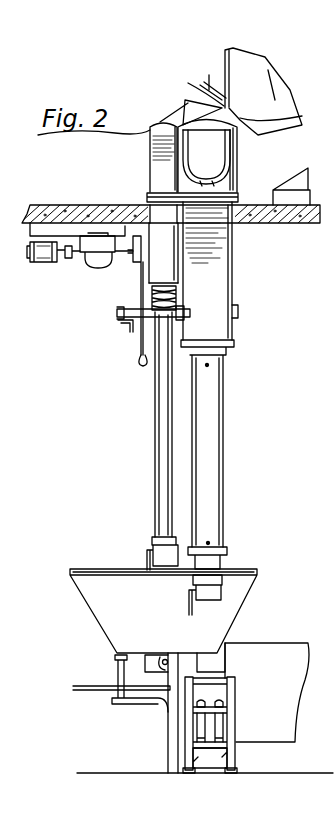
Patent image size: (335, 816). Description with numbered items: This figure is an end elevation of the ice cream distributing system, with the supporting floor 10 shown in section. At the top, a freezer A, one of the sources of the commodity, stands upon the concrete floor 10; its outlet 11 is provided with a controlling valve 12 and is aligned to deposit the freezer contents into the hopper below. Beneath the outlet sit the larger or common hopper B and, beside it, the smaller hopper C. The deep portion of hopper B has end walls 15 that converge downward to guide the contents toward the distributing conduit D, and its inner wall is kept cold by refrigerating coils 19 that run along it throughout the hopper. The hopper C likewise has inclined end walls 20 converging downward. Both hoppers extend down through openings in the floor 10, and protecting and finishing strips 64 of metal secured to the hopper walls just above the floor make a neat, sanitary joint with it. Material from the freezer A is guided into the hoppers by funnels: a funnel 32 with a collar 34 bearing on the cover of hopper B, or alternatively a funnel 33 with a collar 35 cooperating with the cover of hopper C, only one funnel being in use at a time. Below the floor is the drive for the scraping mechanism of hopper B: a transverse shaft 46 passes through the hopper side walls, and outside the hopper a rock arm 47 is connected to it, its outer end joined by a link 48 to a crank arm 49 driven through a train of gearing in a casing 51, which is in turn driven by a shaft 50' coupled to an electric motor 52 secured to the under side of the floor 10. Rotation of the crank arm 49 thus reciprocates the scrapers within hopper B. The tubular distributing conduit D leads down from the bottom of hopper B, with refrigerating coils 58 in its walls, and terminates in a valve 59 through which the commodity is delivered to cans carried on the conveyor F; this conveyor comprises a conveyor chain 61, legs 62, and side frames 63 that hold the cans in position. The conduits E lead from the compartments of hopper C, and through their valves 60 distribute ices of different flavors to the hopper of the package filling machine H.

The supporting floor 10 is at (74, 206).
The driving shaft 50' is at (77, 210).
The outlet 11 is at (190, 84).
The controlling valve 12 is at (209, 75).
The end wall 15 is at (213, 252).
The refrigerating coil 19 is at (207, 173).
The end wall 20 is at (157, 280).
The funnel 32 is at (222, 110).
The funnel 33 is at (165, 123).
The collar 34 is at (238, 116).
The collar 35 is at (206, 140).
The transverse shaft 46 is at (184, 314).
The rock arm 47 is at (138, 354).
The link 48 is at (138, 341).
The crank arm 49 is at (133, 258).
The gear casing 51 is at (87, 264).
The electric motor 52 is at (47, 264).
The refrigerating coil 58 is at (209, 366).
The valve 59 is at (205, 599).
The valve 60 is at (156, 548).
The conveyor chain 61 is at (220, 705).
The leg 62 is at (210, 758).
The side frame 63 is at (233, 678).
The protecting and finishing strip 64 is at (236, 200).
The freezer A is at (244, 63).
The common hopper B is at (236, 158).
The smaller hopper C is at (152, 149).
The distributing conduit D is at (225, 423).
The distributing conduit E is at (153, 420).
The conveyor F is at (173, 731).
The package filling machine H is at (77, 606).